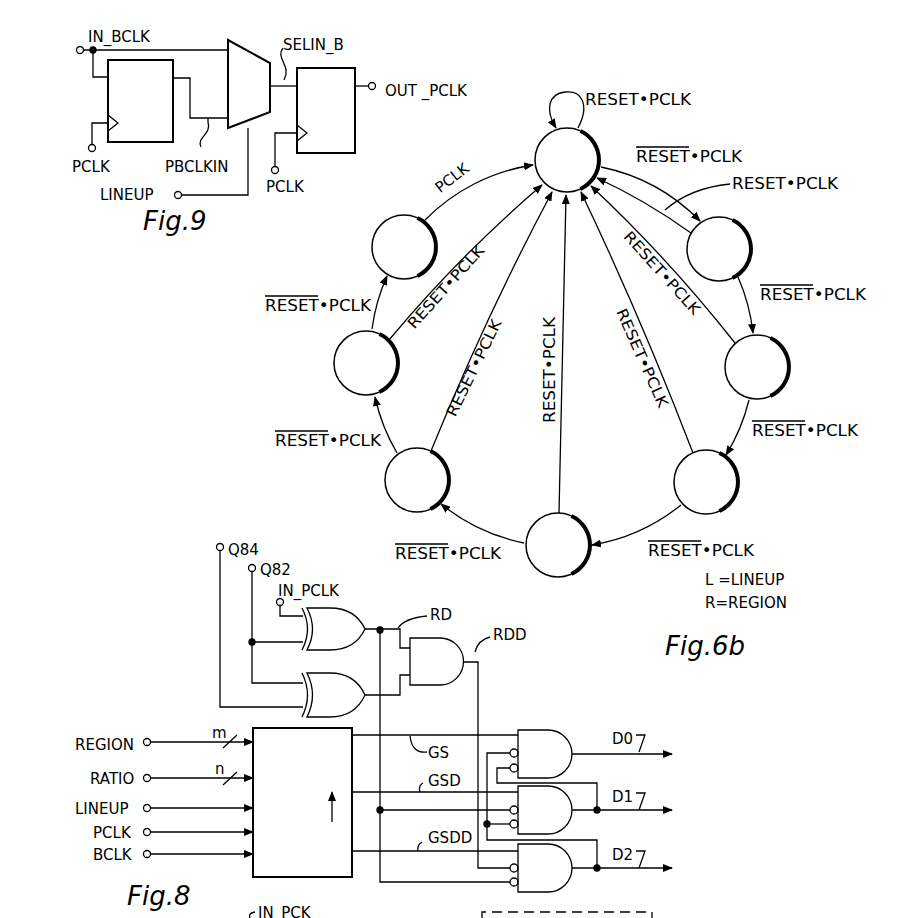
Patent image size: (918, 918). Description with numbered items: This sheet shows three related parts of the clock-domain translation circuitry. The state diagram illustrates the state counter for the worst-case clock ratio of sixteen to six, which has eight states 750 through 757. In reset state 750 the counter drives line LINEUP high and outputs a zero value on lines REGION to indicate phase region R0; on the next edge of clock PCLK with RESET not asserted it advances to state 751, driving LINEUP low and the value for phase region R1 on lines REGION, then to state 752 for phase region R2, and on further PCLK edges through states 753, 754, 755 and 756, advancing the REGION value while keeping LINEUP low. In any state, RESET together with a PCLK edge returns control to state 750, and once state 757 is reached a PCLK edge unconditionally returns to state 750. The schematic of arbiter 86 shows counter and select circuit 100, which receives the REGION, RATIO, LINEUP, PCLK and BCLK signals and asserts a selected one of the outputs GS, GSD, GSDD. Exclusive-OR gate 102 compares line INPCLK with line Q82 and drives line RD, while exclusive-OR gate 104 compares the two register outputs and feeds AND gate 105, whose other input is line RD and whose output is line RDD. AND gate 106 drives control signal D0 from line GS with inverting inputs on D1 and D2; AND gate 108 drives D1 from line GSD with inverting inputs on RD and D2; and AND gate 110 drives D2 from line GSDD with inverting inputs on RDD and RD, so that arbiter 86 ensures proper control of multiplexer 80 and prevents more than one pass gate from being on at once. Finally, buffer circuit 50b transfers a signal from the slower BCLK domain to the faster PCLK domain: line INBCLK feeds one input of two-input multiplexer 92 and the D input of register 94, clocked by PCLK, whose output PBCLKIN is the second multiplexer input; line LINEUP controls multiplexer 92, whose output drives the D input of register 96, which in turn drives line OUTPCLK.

In FIG. 9, the buffer circuit 50b is at (255, 35).
In FIG. 9, the two-input multiplexer 92 is at (246, 48).
In FIG. 9, the register 94 is at (148, 121).
In FIG. 9, the register 96 is at (336, 130).
In FIG. 6B, the reset state 750 is at (540, 138).
In FIG. 6B, the state 751 is at (753, 228).
In FIG. 6B, the state 752 is at (817, 333).
In FIG. 6B, the state 753 is at (742, 478).
In FIG. 6B, the state 754 is at (580, 572).
In FIG. 6B, the state 755 is at (388, 508).
In FIG. 6B, the state 756 is at (340, 347).
In FIG. 6B, the state 757 is at (392, 215).
In FIG. 8, the counter and select circuit 100 is at (322, 764).
In FIG. 8, the exclusive-OR gate 102 is at (352, 622).
In FIG. 8, the exclusive-OR gate 104 is at (353, 700).
In FIG. 8, the AND gate 105 is at (446, 675).
In FIG. 8, the AND gate 106 is at (556, 767).
In FIG. 8, the AND gate 108 is at (556, 823).
In FIG. 8, the AND gate 110 is at (556, 881).
In FIG. 8, the arbiter 86 is at (517, 710).
In FIG. 8, the multiplexer 80 is at (658, 917).